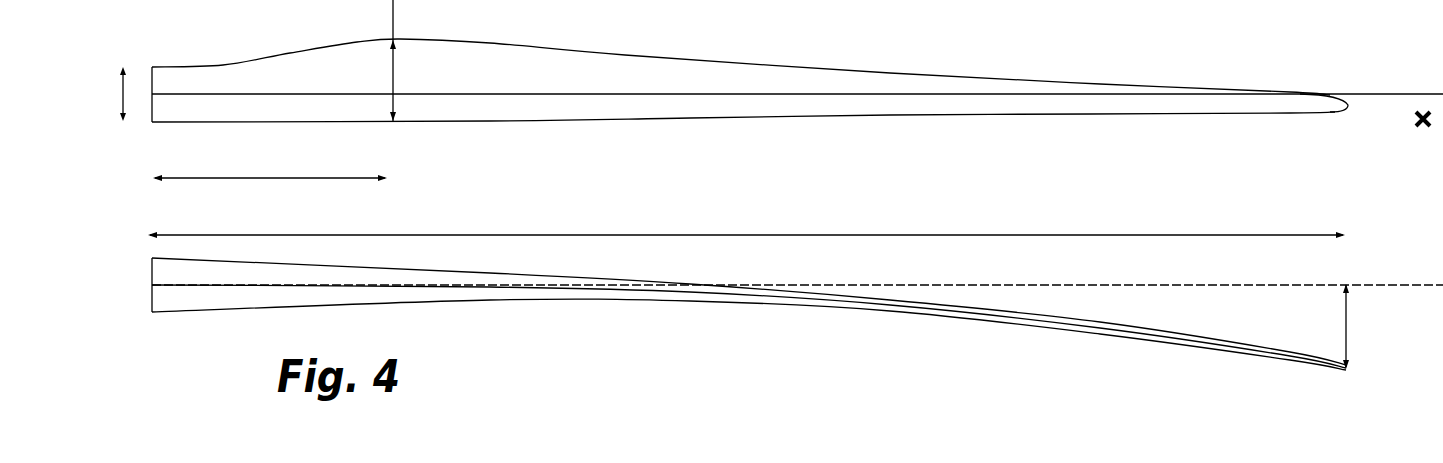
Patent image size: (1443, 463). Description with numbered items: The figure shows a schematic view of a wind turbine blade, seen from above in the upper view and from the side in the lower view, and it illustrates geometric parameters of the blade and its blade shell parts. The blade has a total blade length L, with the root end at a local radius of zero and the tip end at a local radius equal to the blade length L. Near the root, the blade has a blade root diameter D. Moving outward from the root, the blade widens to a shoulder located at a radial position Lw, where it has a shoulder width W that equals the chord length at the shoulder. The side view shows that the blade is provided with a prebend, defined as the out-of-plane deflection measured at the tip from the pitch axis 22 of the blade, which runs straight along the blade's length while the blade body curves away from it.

The pitch axis 22 is at (625, 94).
The blade root diameter D is at (114, 94).
The shoulder width W is at (406, 61).
The shoulder position Lw is at (270, 167).
The blade length L is at (746, 224).